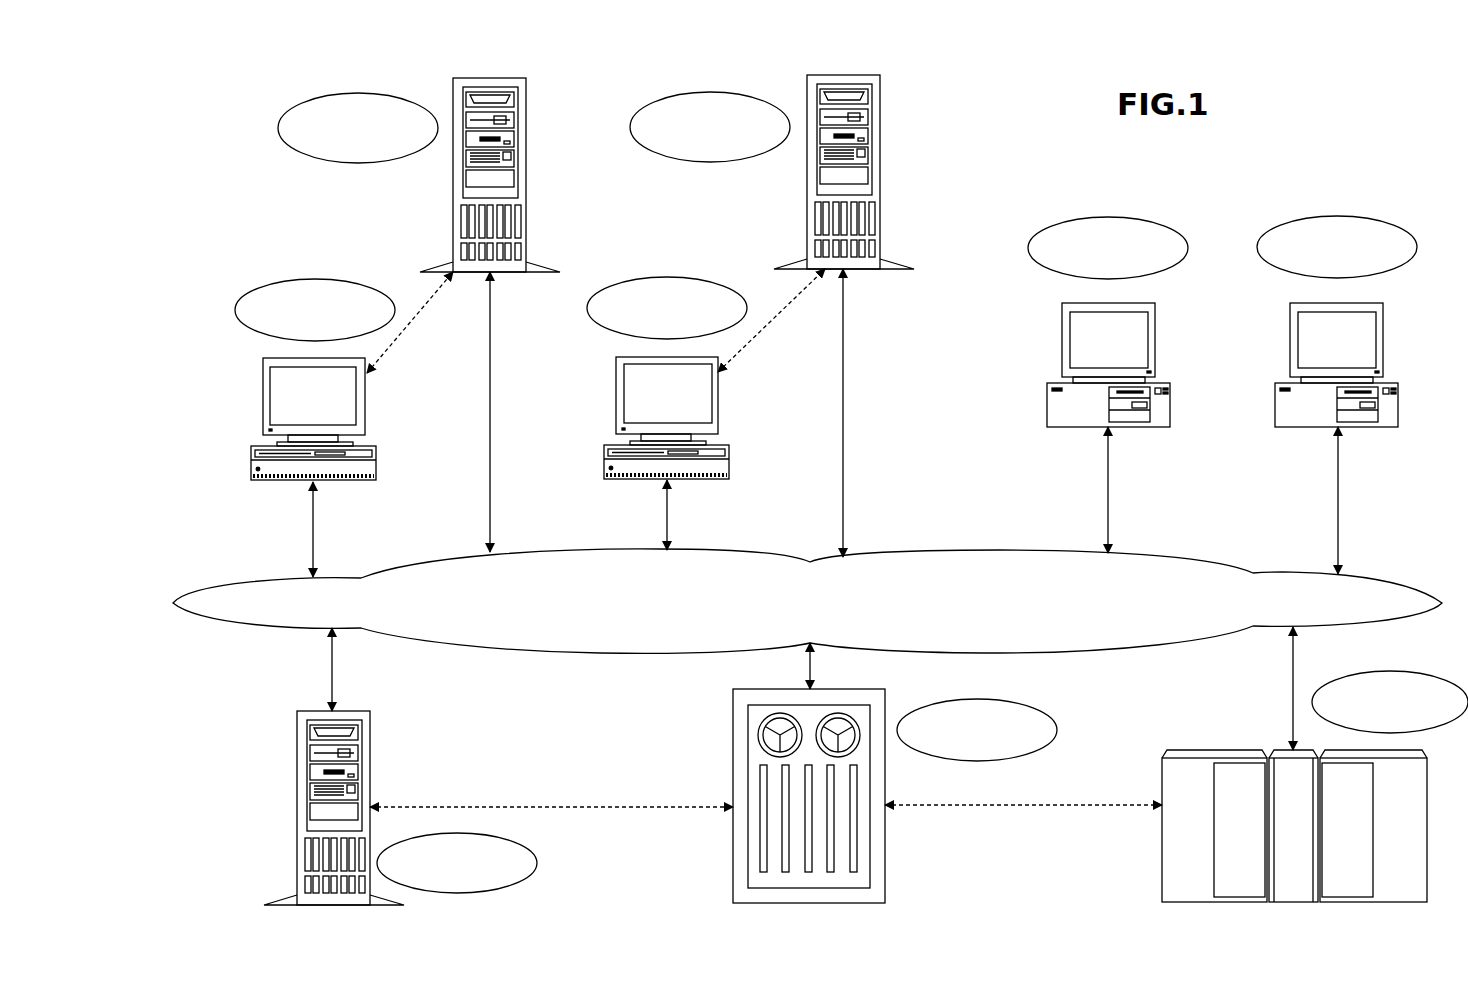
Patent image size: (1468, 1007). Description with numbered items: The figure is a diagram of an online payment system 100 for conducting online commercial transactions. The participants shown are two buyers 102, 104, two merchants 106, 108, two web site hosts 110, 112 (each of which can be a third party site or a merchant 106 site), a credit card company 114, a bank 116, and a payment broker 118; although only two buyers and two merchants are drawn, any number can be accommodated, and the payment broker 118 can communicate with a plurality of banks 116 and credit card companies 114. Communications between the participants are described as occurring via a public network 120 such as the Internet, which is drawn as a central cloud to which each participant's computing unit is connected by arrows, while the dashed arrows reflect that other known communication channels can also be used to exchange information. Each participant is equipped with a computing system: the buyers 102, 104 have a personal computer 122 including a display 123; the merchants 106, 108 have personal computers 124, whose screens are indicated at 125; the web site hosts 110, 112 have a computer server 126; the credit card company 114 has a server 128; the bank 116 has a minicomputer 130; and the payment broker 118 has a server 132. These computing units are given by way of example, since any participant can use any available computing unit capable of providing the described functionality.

The online payment system 100 is at (240, 118).
The buyer 102 is at (1112, 218).
The buyer 104 is at (1320, 215).
The merchant 106 is at (280, 283).
The merchant 108 is at (588, 303).
The web site host 110 is at (345, 165).
The web site host 112 is at (753, 160).
The credit card company 114 is at (525, 842).
The bank 116 is at (1382, 672).
The payment broker 118 is at (1033, 702).
The public network 120 is at (607, 547).
The personal computer 122 is at (1062, 322).
The display 123 is at (1092, 347).
The personal computer 124 is at (263, 412).
The merchant computer display screen 125 is at (340, 392).
The computer server 126 is at (527, 143).
The server 128 is at (297, 747).
The minicomputer 130 is at (1162, 875).
The server 132 is at (733, 743).